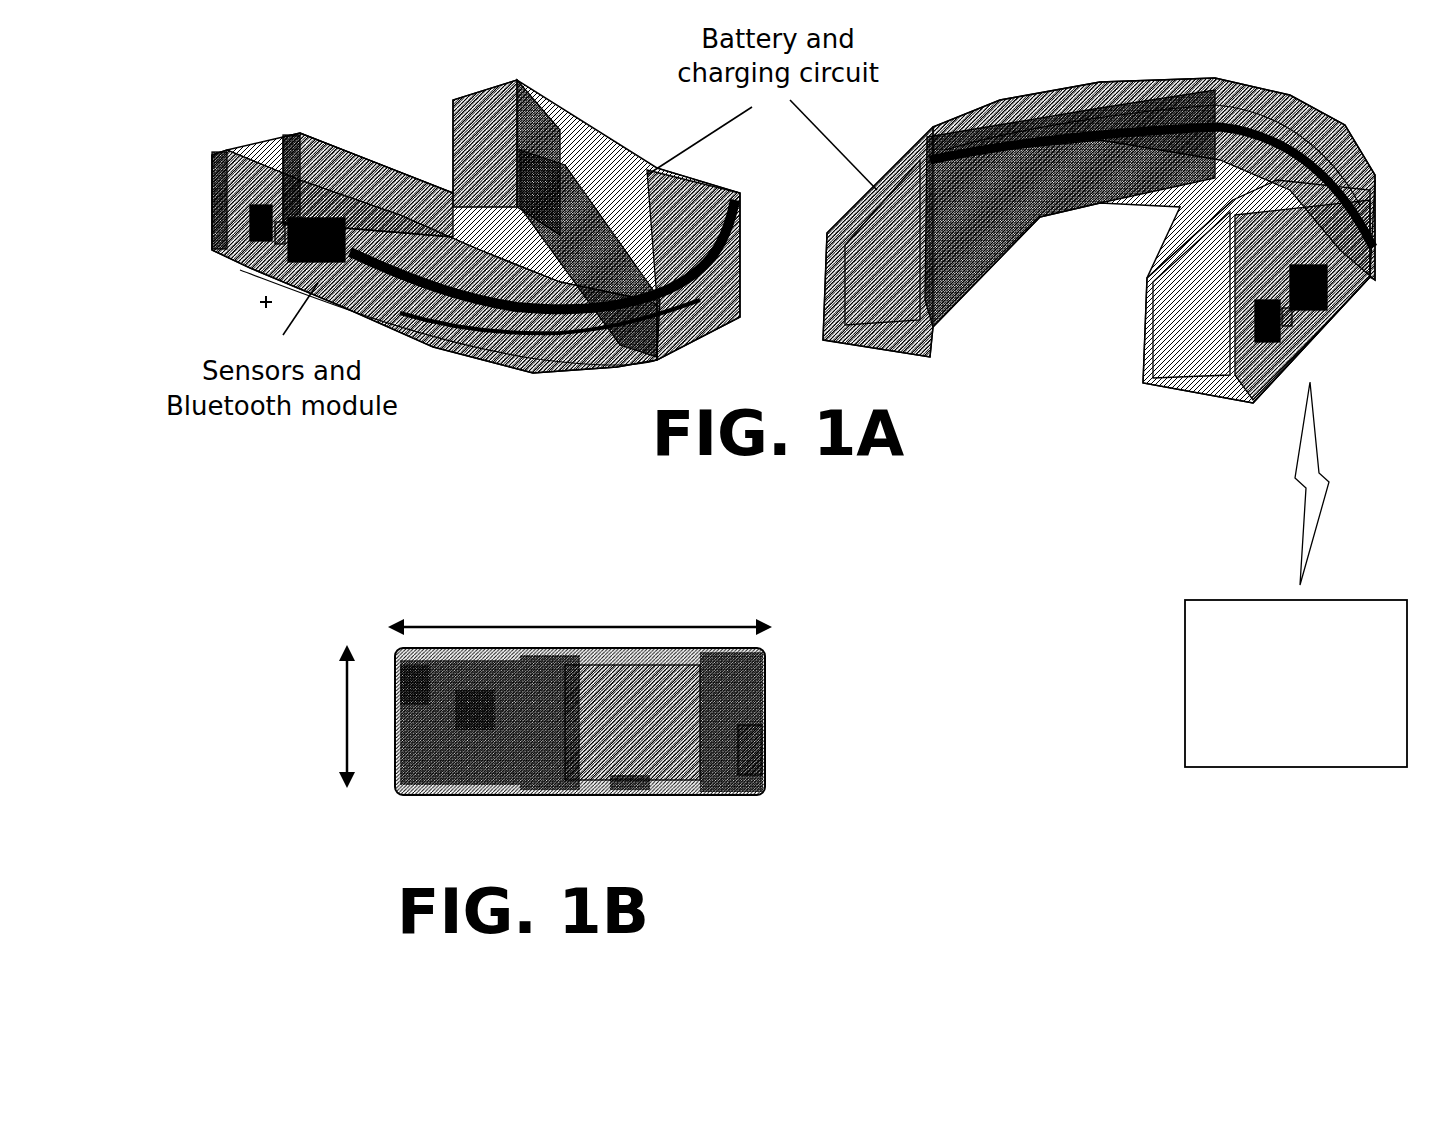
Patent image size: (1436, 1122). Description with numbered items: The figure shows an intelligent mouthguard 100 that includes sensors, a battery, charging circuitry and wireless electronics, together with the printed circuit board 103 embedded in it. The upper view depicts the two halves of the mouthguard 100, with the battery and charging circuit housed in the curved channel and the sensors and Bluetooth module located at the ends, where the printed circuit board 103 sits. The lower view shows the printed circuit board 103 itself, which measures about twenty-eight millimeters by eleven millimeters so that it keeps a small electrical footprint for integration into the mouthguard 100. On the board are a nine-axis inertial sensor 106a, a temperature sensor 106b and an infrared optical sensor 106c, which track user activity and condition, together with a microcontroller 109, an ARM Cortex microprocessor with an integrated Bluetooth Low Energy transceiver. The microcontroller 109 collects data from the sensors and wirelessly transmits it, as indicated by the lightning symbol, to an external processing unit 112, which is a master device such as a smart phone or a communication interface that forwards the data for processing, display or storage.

In FIG. 1A, the intelligent mouthguard 100 is at (405, 95).
In FIG. 1A, the printed circuit board 103 is at (252, 258).
In FIG. 1B, the printed circuit board 103 is at (649, 688).
In FIG. 1A, the external processing unit 112 is at (1296, 683).
In FIG. 1B, the 9-axis inertial sensor 106a is at (462, 724).
In FIG. 1B, the temperature sensor 106b is at (645, 790).
In FIG. 1B, the infrared (IR) optical sensor 106c is at (391, 675).
In FIG. 1B, the microcontroller 109 is at (655, 718).